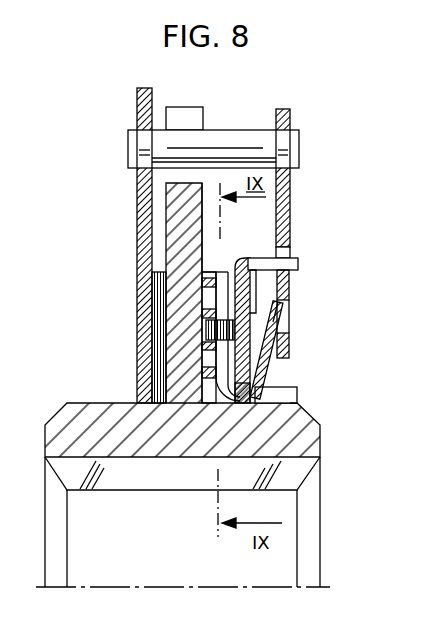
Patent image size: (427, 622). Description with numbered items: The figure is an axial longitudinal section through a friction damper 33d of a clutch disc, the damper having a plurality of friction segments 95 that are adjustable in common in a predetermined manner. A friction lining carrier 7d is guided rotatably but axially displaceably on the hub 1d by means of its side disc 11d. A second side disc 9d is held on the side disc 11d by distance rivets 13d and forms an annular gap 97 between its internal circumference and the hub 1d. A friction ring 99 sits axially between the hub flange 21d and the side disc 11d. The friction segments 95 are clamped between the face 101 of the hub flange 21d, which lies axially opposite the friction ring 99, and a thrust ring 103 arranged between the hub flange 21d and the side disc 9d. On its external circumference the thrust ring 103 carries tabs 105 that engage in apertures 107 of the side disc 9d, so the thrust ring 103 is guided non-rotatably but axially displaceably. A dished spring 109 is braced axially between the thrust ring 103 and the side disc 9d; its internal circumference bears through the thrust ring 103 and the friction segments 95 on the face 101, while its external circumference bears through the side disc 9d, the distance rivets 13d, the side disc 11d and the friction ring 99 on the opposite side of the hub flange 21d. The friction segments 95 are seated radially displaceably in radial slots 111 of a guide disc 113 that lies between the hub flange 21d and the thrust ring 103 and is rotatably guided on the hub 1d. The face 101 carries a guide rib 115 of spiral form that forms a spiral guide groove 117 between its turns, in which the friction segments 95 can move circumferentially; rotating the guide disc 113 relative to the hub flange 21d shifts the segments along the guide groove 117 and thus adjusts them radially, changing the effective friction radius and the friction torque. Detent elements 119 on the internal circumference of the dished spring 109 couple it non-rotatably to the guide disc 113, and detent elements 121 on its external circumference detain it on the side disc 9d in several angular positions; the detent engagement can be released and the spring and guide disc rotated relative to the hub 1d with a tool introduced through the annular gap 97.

The hub 1d is at (60, 422).
The friction lining carrier 7d is at (114, 103).
The side disc 9d is at (283, 185).
The side disc 11d is at (145, 186).
The distance rivets 13d is at (230, 138).
The hub flange 21d is at (170, 213).
The friction damper 33d is at (351, 381).
The friction segments 95 is at (274, 310).
The annular gap 97 is at (290, 375).
The friction ring 99 is at (157, 283).
The face of the hub flange 101 is at (204, 240).
The thrust ring 103 is at (243, 300).
The tabs 105 is at (299, 264).
The apertures 107 is at (284, 251).
The dished spring 109 is at (290, 350).
The radial slots 111 is at (222, 357).
The guide disc 113 is at (222, 276).
The guide rib 115 is at (208, 303).
The guide groove 117 is at (212, 326).
The detent elements 119 is at (290, 405).
The detent elements 121 is at (282, 322).